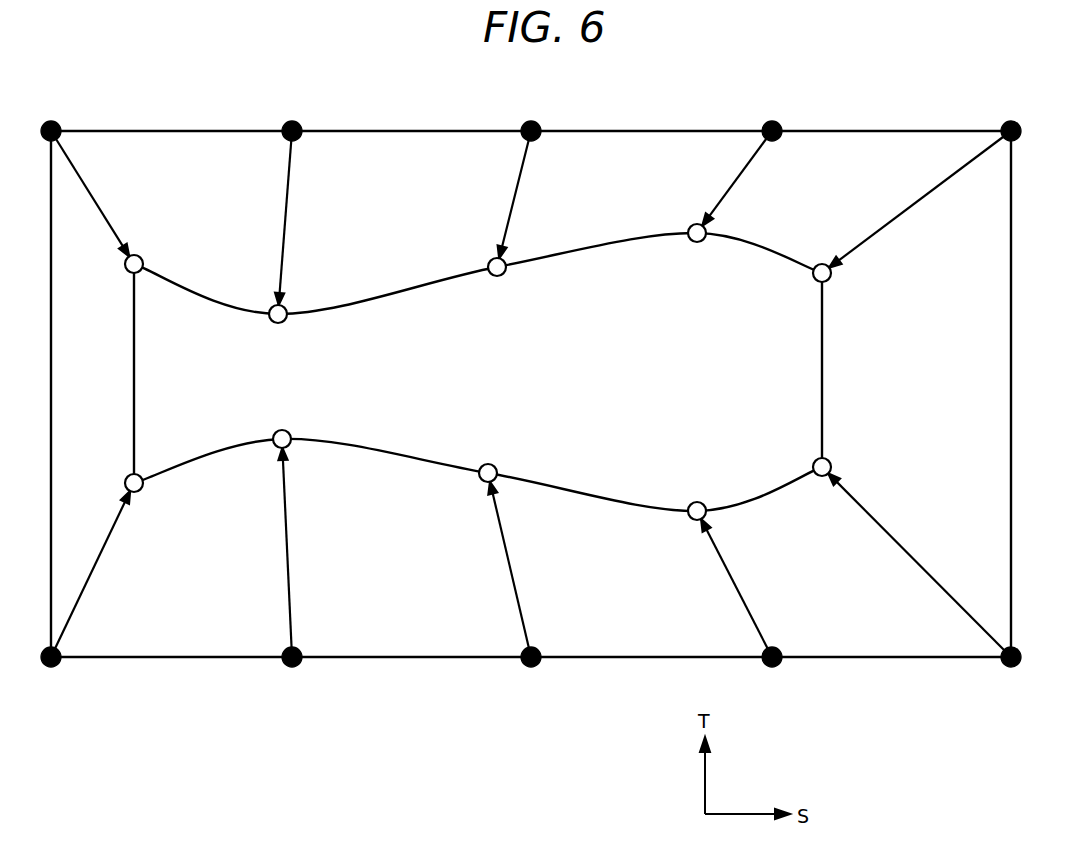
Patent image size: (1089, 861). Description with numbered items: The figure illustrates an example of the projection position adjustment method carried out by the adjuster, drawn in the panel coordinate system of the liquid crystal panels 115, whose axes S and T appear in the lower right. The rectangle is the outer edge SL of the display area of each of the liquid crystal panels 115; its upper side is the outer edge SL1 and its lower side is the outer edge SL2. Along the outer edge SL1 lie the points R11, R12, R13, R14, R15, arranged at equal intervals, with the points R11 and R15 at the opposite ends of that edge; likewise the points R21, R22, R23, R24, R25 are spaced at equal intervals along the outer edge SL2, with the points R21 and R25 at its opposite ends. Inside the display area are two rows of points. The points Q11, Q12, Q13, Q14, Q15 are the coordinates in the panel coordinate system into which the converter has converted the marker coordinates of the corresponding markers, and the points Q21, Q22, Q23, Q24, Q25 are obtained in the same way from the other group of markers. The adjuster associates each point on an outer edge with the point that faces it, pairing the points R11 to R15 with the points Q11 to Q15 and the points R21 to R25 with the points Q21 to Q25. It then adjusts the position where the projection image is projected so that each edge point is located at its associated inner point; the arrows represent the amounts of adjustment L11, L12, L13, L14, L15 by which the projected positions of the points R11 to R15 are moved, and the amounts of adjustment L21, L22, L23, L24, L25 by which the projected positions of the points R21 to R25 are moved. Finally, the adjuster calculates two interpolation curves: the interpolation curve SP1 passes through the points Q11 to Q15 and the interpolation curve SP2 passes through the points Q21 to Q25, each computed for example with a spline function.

The liquid crystal panel 115 is at (945, 362).
The outer edge SL is at (1013, 415).
The outer edge SL1 is at (649, 129).
The outer edge SL2 is at (379, 659).
The interpolation curve SP1 is at (436, 282).
The interpolation curve SP2 is at (419, 461).
The point R11 is at (53, 120).
The point R12 is at (292, 120).
The point R13 is at (532, 120).
The point R14 is at (773, 120).
The point R15 is at (1012, 120).
The point R21 is at (53, 668).
The point R22 is at (294, 668).
The point R23 is at (533, 668).
The point R24 is at (774, 668).
The point R25 is at (1012, 668).
The point Q11 is at (141, 260).
The point Q12 is at (285, 310).
The point Q13 is at (504, 262).
The point Q14 is at (705, 229).
The point Q15 is at (823, 264).
The point Q21 is at (140, 490).
The point Q22 is at (290, 447).
The point Q23 is at (496, 480).
The point Q24 is at (705, 517).
The point Q25 is at (831, 467).
The amount of adjustment L11 is at (85, 182).
The amount of adjustment L12 is at (288, 182).
The amount of adjustment L13 is at (519, 182).
The amount of adjustment L14 is at (747, 167).
The amount of adjustment L15 is at (915, 211).
The amount of adjustment L21 is at (92, 581).
The amount of adjustment L22 is at (288, 581).
The amount of adjustment L23 is at (513, 581).
The amount of adjustment L24 is at (741, 597).
The amount of adjustment L25 is at (914, 550).